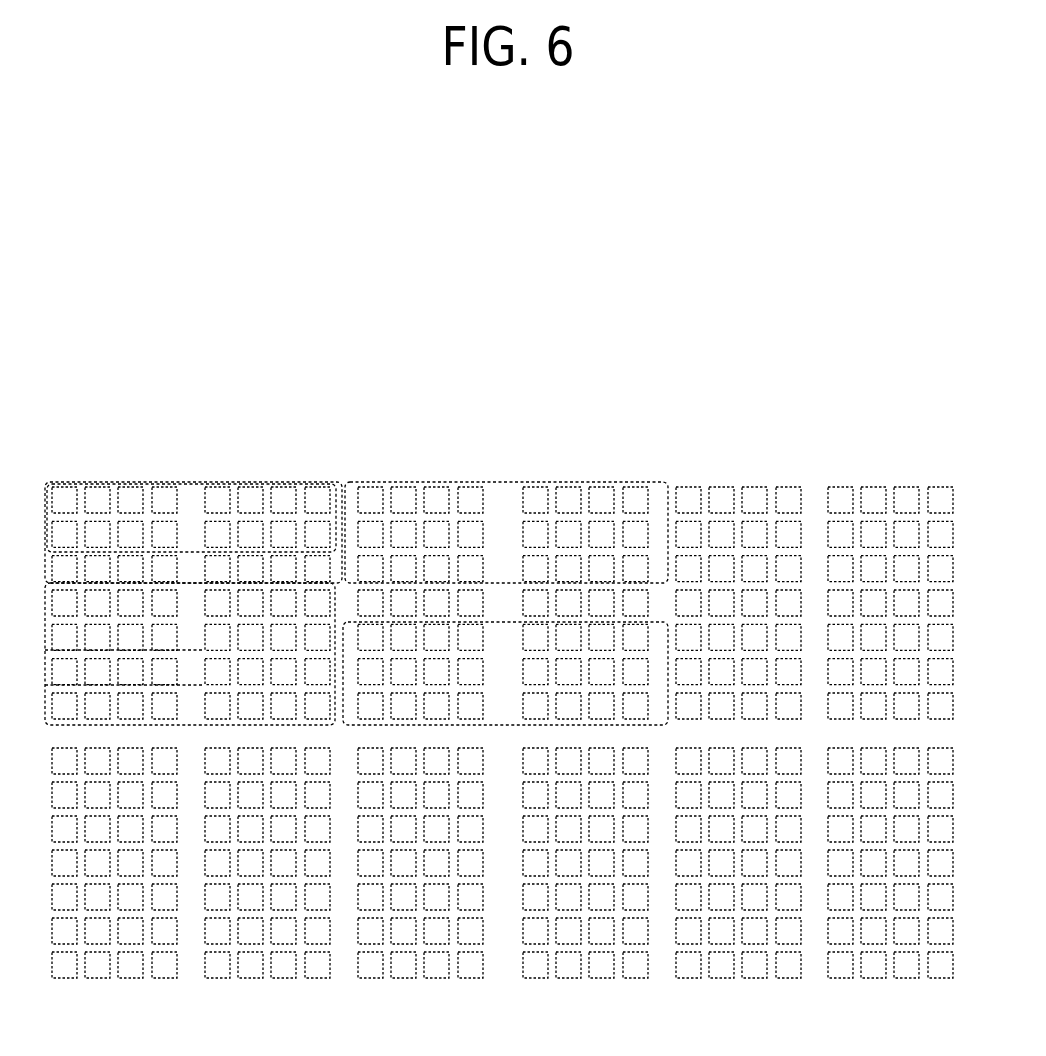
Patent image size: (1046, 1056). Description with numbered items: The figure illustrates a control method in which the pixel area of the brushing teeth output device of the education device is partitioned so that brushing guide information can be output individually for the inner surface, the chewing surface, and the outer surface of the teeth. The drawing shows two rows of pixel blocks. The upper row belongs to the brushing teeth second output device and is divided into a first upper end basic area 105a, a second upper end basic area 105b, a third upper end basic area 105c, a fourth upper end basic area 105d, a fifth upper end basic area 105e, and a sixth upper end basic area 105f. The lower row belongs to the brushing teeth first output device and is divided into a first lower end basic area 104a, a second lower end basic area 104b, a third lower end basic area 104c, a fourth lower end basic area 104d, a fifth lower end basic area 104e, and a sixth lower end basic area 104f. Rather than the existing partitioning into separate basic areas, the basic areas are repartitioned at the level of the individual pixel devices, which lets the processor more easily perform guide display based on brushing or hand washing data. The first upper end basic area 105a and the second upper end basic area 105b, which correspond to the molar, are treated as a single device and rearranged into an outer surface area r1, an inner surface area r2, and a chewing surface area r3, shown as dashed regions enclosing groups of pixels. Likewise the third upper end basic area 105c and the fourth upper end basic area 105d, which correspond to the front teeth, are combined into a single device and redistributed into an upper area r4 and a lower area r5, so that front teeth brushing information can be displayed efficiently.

The first upper end basic area 105a is at (114, 588).
The second upper end basic area 105b is at (267, 588).
The third upper end basic area 105c is at (420, 588).
The fourth upper end basic area 105d is at (585, 588).
The fifth upper end basic area 105e is at (738, 588).
The sixth upper end basic area 105f is at (890, 588).
The first lower end basic area 104a is at (114, 881).
The second lower end basic area 104b is at (267, 881).
The third lower end basic area 104c is at (420, 881).
The fourth lower end basic area 104d is at (585, 881).
The fifth lower end basic area 104e is at (738, 881).
The sixth lower end basic area 104f is at (890, 881).
The outer surface area r1 is at (155, 482).
The inner surface area r2 is at (197, 583).
The chewing surface area r3 is at (335, 685).
The upper area r4 is at (486, 482).
The lower area r5 is at (657, 622).